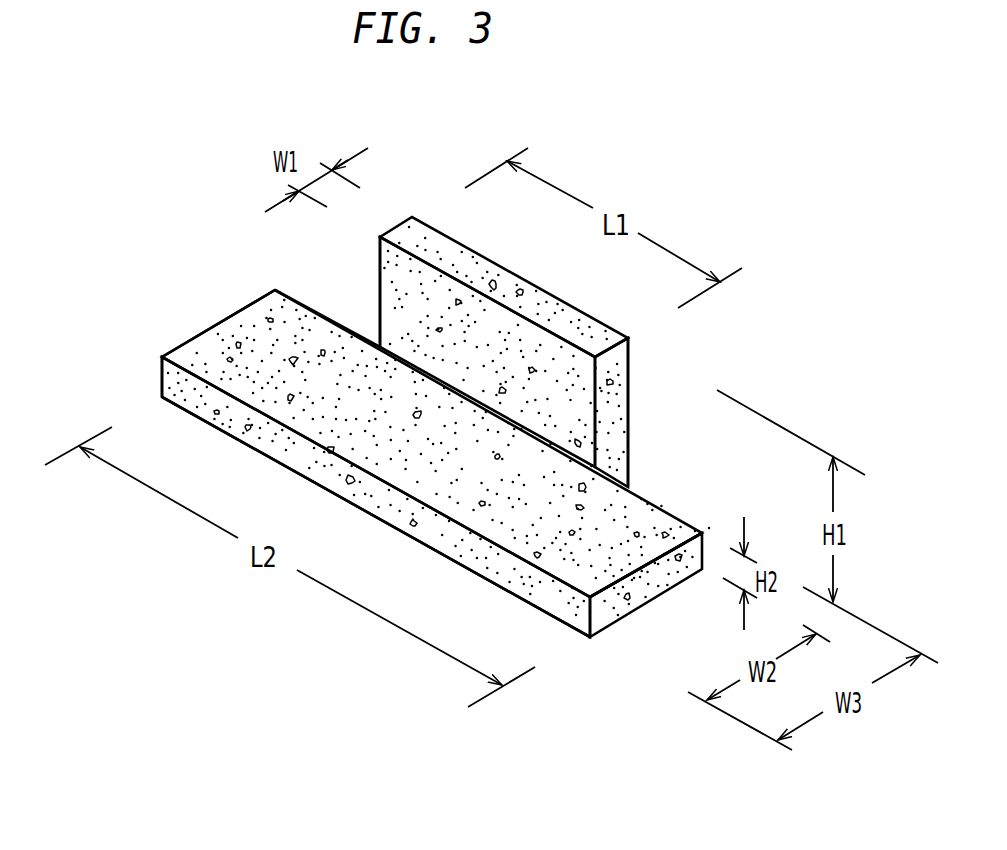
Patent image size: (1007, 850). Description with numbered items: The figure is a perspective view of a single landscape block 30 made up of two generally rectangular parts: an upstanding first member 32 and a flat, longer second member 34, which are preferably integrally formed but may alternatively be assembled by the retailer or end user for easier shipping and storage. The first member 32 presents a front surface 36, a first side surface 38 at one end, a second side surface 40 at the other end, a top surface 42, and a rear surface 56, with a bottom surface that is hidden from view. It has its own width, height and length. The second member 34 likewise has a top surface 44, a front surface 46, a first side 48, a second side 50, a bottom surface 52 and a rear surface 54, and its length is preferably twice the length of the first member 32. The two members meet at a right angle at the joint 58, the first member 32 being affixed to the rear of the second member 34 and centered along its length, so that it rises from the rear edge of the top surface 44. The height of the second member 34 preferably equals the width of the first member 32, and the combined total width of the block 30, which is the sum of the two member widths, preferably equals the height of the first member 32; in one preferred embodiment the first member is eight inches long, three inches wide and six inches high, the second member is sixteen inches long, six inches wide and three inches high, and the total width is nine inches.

The block 30 is at (196, 188).
The first member 32 is at (387, 293).
The second member 34 is at (257, 332).
The front surface 36 is at (567, 362).
The first side surface 38 is at (618, 435).
The second side surface 40 is at (380, 247).
The top surface 42 is at (451, 257).
The top surface 44 is at (195, 360).
The front surface 46 is at (462, 545).
The first side 48 is at (607, 603).
The second side 50 is at (203, 330).
The bottom surface 52 is at (248, 445).
The rear surface 54 is at (673, 515).
The rear surface 56 is at (632, 408).
The right-angle joint 58 is at (380, 358).